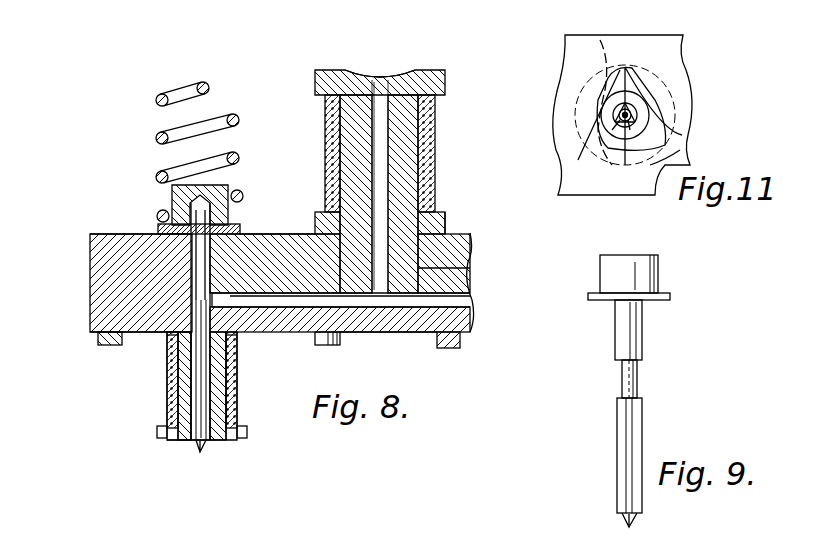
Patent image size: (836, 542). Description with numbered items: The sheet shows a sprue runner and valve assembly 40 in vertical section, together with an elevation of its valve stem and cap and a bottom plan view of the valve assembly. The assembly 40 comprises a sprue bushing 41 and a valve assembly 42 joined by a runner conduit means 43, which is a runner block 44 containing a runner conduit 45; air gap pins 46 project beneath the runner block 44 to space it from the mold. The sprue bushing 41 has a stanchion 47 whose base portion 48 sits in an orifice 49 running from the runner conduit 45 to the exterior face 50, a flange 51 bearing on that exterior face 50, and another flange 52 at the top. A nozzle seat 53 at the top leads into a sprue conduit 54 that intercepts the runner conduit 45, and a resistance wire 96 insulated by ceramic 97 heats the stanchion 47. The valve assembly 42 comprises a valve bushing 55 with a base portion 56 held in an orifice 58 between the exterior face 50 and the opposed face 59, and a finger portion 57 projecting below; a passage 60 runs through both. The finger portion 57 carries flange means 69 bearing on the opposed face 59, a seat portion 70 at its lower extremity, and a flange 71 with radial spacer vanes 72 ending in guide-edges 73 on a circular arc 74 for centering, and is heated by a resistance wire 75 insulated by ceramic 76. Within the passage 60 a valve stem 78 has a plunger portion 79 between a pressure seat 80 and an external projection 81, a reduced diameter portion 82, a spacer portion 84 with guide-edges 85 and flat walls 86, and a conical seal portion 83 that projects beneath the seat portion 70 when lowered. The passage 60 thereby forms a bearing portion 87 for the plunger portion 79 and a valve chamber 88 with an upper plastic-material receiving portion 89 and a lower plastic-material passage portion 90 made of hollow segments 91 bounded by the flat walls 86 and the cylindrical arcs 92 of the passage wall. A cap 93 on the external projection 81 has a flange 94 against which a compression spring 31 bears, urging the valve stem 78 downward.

In FIG. 8, the compression spring 31 is at (218, 114).
In FIG. 8, the sprue runner and valve assembly 40 is at (476, 350).
In FIG. 8, the sprue bushing 41 is at (440, 222).
In FIG. 8, the valve assembly 42 is at (176, 442).
In FIG. 8, the runner conduit means 43 is at (312, 302).
In FIG. 8, the runner block 44 is at (89, 259).
In FIG. 8, the runner conduit 45 is at (470, 304).
In FIG. 8, the air gap pins 46 is at (324, 346).
In FIG. 8, the stanchion 47 is at (405, 135).
In FIG. 8, the base portion 48 is at (452, 252).
In FIG. 8, the orifice 49 is at (450, 275).
In FIG. 8, the exterior face 50 is at (284, 228).
In FIG. 8, the flange 51 is at (472, 232).
In FIG. 8, the flange 52 is at (428, 86).
In FIG. 8, the nozzle seat 53 is at (388, 72).
In FIG. 8, the sprue conduit 54 is at (383, 196).
In FIG. 8, the valve bushing 55 is at (186, 320).
In FIG. 8, the base portion 56 is at (152, 236).
In FIG. 8, the finger portion 57 is at (242, 440).
In FIG. 8, the orifice 58 is at (262, 219).
In FIG. 8, the opposed face 59 is at (389, 343).
In FIG. 8, the passage 60 is at (172, 340).
In FIG. 11, the passage 60 is at (672, 150).
In FIG. 8, the flange means 69 is at (236, 340).
In FIG. 8, the seat portion 70 is at (189, 452).
In FIG. 11, the seat portion 70 is at (606, 40).
In FIG. 8, the flange 71 is at (157, 432).
In FIG. 11, the flange 71 is at (602, 110).
In FIG. 11, the spacer vanes 72 is at (630, 72).
In FIG. 11, the guide-edges 73 is at (625, 60).
In FIG. 11, the circular arc 74 is at (563, 72).
In FIG. 8, the resistance wire 75 is at (190, 380).
In FIG. 8, the ceramic 76 is at (224, 406).
In FIG. 9, the valve stem 78 is at (634, 343).
In FIG. 8, the plunger portion 79 is at (197, 250).
In FIG. 9, the plunger portion 79 is at (634, 320).
In FIG. 8, the pressure seat 80 is at (194, 282).
In FIG. 9, the pressure seat 80 is at (637, 364).
In FIG. 8, the external projection 81 is at (238, 228).
In FIG. 9, the reduced diameter portion 82 is at (622, 378).
In FIG. 8, the seal portion 83 is at (205, 447).
In FIG. 9, the seal portion 83 is at (632, 520).
In FIG. 9, the spacer portion 84 is at (640, 428).
In FIG. 8, the guide-edges 85 is at (226, 386).
In FIG. 11, the guide-edges 85 is at (637, 110).
In FIG. 9, the guide-edges 85 is at (618, 460).
In FIG. 8, the flat walls 86 is at (224, 416).
In FIG. 11, the flat walls 86 is at (619, 115).
In FIG. 9, the flat walls 86 is at (618, 482).
In FIG. 8, the bearing portion 87 is at (166, 232).
In FIG. 8, the valve chamber 88 is at (182, 370).
In FIG. 8, the plastic-material receiving portion 89 is at (190, 301).
In FIG. 8, the plastic-material passage portion 90 is at (190, 401).
In FIG. 11, the plastic-material passage portion 90 is at (640, 104).
In FIG. 11, the hollow segments 91 is at (620, 125).
In FIG. 11, the cylindrical arcs 92 is at (629, 125).
In FIG. 8, the cap 93 is at (226, 190).
In FIG. 9, the cap 93 is at (656, 265).
In FIG. 8, the flange 94 is at (160, 213).
In FIG. 8, the resistance wire 96 is at (332, 122).
In FIG. 8, the ceramic 97 is at (333, 160).